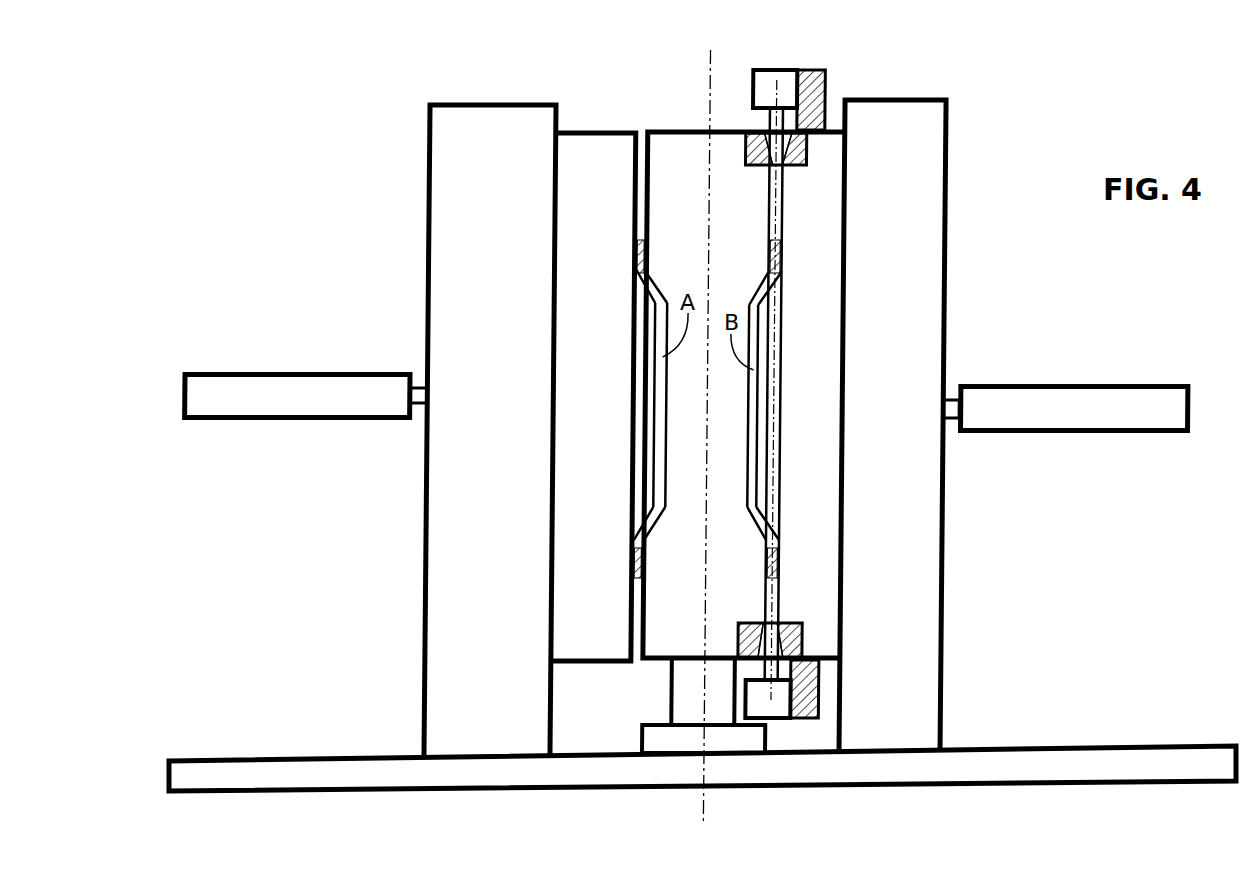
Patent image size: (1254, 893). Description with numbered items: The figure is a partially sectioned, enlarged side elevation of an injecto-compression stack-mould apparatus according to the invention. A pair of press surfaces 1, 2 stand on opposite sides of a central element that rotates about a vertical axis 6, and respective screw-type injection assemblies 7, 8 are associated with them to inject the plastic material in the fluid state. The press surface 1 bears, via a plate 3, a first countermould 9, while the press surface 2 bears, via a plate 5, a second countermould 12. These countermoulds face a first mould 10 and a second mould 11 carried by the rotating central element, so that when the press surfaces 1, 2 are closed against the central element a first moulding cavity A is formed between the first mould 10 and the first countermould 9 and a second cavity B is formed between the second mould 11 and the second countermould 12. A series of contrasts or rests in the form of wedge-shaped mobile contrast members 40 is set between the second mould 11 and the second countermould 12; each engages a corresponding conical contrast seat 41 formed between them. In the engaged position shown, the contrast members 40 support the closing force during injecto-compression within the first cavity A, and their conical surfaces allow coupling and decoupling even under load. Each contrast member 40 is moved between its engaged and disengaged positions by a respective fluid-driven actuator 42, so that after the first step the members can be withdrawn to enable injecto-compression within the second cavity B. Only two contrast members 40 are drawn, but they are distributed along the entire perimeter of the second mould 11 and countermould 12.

The press surface 1 is at (480, 125).
The press surface 2 is at (935, 258).
The plate 3 is at (596, 148).
The plate 5 is at (826, 155).
The vertical axis 6 is at (705, 117).
The screw-type injection assembly 7 is at (313, 386).
The screw-type injection assembly 8 is at (1030, 392).
The first countermould 9 is at (643, 427).
The first mould 10 is at (664, 453).
The second mould 11 is at (758, 448).
The second countermould 12 is at (767, 327).
The contrast member 40 is at (798, 168).
The contrast seat 41 is at (756, 167).
The fluid-driven actuator 42 is at (782, 82).